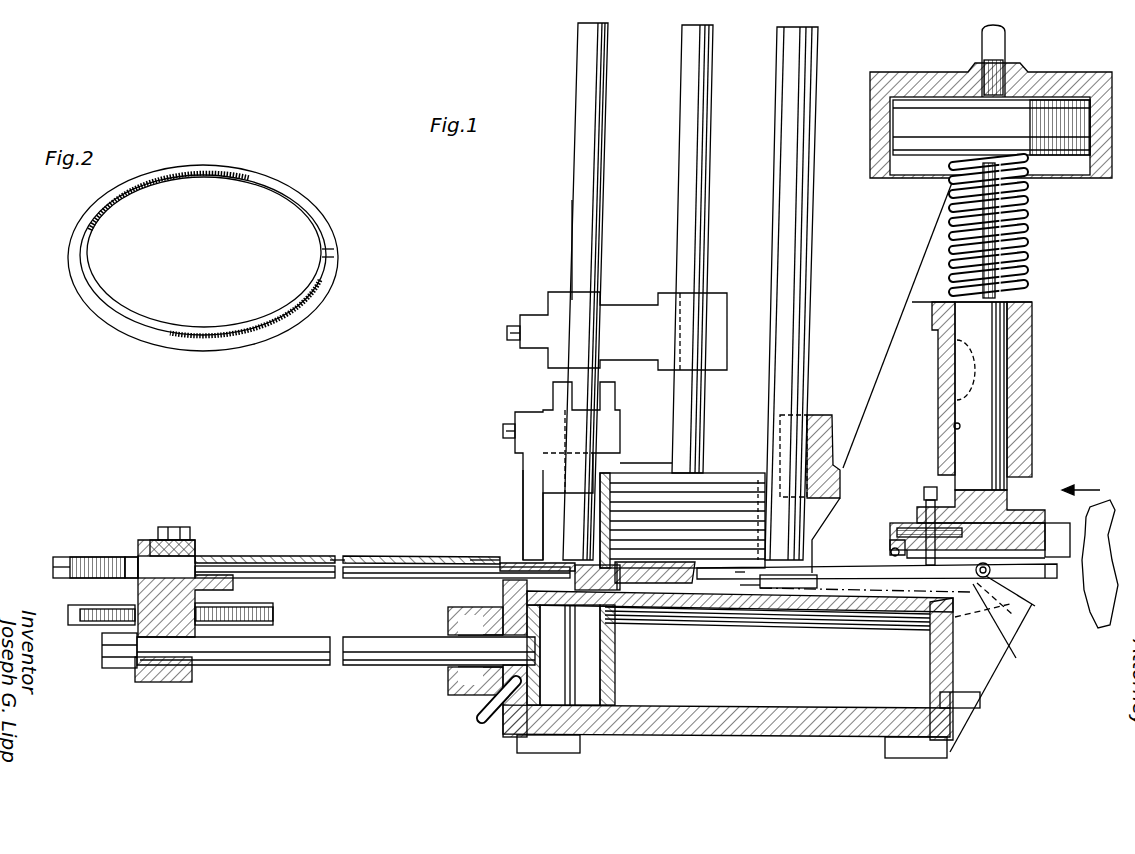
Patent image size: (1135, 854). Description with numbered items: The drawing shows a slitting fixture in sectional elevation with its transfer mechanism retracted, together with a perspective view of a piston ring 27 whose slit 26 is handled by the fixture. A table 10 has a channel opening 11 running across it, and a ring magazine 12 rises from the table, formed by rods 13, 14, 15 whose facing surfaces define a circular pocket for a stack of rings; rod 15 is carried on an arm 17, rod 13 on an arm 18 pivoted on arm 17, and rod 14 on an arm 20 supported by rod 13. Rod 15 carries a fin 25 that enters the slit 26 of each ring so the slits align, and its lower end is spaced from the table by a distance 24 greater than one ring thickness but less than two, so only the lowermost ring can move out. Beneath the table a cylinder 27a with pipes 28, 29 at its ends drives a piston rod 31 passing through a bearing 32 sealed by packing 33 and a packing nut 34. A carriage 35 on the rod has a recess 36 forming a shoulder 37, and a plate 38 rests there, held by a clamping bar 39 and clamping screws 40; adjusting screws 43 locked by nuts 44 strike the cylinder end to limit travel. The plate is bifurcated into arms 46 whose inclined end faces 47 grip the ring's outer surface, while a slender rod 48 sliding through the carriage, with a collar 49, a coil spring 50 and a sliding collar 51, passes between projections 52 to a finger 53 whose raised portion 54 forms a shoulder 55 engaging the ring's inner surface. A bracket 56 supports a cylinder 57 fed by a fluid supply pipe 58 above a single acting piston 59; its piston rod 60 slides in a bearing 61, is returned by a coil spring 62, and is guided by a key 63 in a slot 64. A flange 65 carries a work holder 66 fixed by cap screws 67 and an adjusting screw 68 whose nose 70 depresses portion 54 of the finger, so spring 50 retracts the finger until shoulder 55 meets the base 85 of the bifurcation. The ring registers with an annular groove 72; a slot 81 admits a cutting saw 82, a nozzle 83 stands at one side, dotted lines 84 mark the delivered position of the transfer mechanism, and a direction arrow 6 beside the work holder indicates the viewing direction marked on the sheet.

In FIG. 1, the direction arrow 6 is at (1098, 492).
In FIG. 1, the table 10 is at (740, 574).
In FIG. 1, the channel opening 11 is at (755, 586).
In FIG. 1, the ring magazine 12 is at (620, 210).
In FIG. 1, the rod 13 is at (580, 170).
In FIG. 1, the rod 14 is at (692, 147).
In FIG. 1, the rod 15 is at (810, 206).
In FIG. 1, the arm 17 is at (822, 420).
In FIG. 1, the arm 18 is at (552, 408).
In FIG. 1, the arm 20 is at (626, 330).
In FIG. 1, the spacing 24 is at (788, 575).
In FIG. 1, the fin 25 is at (776, 248).
In FIG. 2, the slit 26 is at (334, 253).
In FIG. 1, the slit 26 is at (760, 480).
In FIG. 2, the piston ring 27 is at (318, 218).
In FIG. 1, the piston ring 27 is at (727, 480).
In FIG. 1, the cylinder 27a is at (790, 737).
In FIG. 1, the pipe 28 is at (490, 715).
In FIG. 1, the pipe 29 is at (968, 706).
In FIG. 1, the piston rod 31 is at (358, 665).
In FIG. 1, the bearing 32 is at (492, 690).
In FIG. 1, the packing 33 is at (462, 672).
In FIG. 1, the packing nut 34 is at (470, 682).
In FIG. 1, the carriage 35 is at (170, 682).
In FIG. 1, the recess 36 is at (210, 566).
In FIG. 1, the shoulder 37 is at (143, 540).
In FIG. 1, the plate 38 is at (250, 556).
In FIG. 1, the clamping bar 39 is at (200, 557).
In FIG. 1, the clamping screws 40 is at (176, 527).
In FIG. 1, the adjusting screws 43 is at (265, 608).
In FIG. 1, the nuts 44 is at (130, 605).
In FIG. 1, the arms 46 is at (525, 560).
In FIG. 1, the inclined end faces 47 is at (588, 567).
In FIG. 1, the rod 48 is at (320, 567).
In FIG. 1, the collar 49 is at (60, 557).
In FIG. 1, the coil spring 50 is at (86, 557).
In FIG. 1, the sliding collar 51 is at (133, 557).
In FIG. 1, the projections 52 is at (515, 567).
In FIG. 1, the finger 53 is at (555, 563).
In FIG. 1, the portion 54 is at (665, 570).
In FIG. 1, the shoulder 55 is at (618, 565).
In FIG. 1, the bracket 56 is at (895, 374).
In FIG. 1, the cylinder 57 is at (1088, 96).
In FIG. 1, the fluid supply pipe 58 is at (1002, 38).
In FIG. 1, the single acting piston 59 is at (1075, 158).
In FIG. 1, the piston rod 60 is at (1027, 218).
In FIG. 1, the bearing 61 is at (1032, 338).
In FIG. 1, the coil spring 62 is at (1027, 262).
In FIG. 1, the key 63 is at (955, 345).
In FIG. 1, the slot 64 is at (954, 426).
In FIG. 1, the flange 65 is at (1030, 506).
In FIG. 1, the work holder 66 is at (904, 523).
In FIG. 1, the cap screws 67 is at (924, 496).
In FIG. 1, the adjusting screw 68 is at (930, 487).
In FIG. 1, the nose 70 is at (985, 577).
In FIG. 1, the annular groove 72 is at (903, 551).
In FIG. 1, the slot 81 is at (1058, 537).
In FIG. 1, the cutting saw 82 is at (1100, 604).
In FIG. 1, the nozzle 83 is at (1002, 664).
In FIG. 1, the dotted-line position 84 is at (1009, 628).
In FIG. 1, the base 85 is at (498, 562).